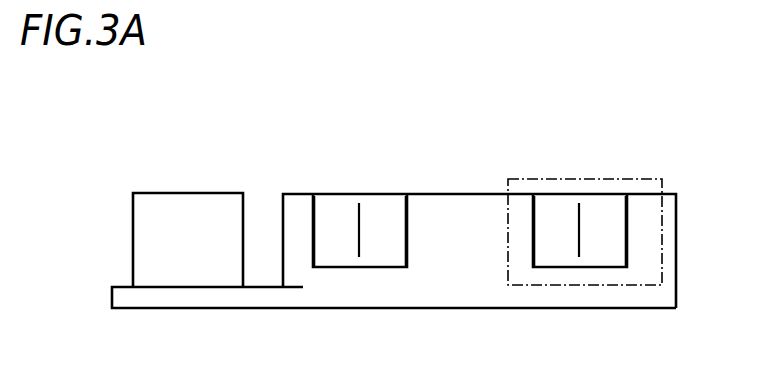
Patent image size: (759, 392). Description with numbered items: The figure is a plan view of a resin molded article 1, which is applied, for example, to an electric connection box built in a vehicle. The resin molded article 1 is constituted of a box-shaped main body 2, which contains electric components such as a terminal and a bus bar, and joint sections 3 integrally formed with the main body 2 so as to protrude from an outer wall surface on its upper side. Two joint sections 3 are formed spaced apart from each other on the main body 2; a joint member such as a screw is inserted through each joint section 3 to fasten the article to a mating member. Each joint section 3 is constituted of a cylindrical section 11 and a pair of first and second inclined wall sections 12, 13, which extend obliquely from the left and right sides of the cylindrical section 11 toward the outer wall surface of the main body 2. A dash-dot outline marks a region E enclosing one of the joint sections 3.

The resin molded article 1 is at (484, 151).
The main body 2 is at (465, 304).
The joint section 3 is at (385, 192).
The cylindrical section 11 is at (365, 203).
The first inclined wall section 12 is at (335, 203).
The second inclined wall section 13 is at (393, 205).
The region E (enlarged portion) E is at (662, 233).